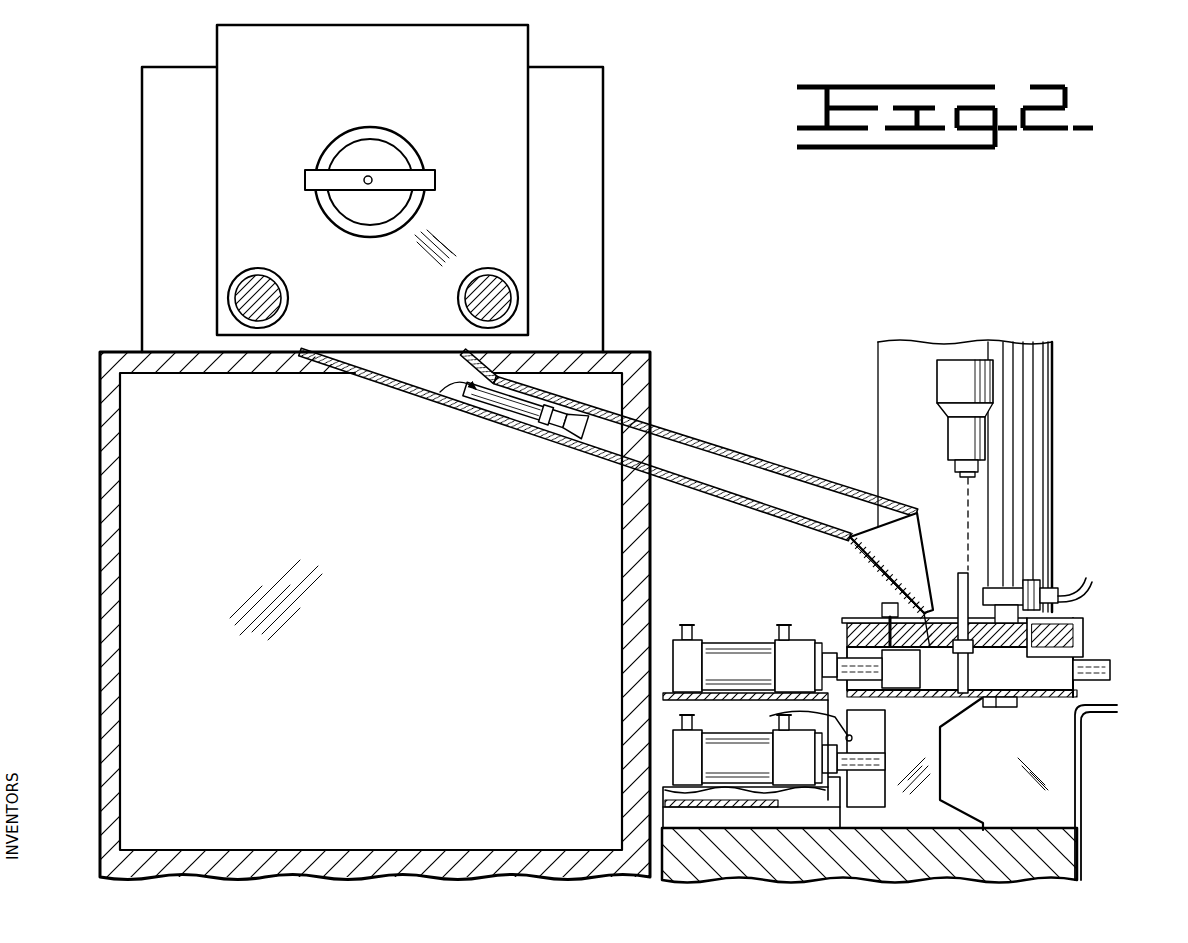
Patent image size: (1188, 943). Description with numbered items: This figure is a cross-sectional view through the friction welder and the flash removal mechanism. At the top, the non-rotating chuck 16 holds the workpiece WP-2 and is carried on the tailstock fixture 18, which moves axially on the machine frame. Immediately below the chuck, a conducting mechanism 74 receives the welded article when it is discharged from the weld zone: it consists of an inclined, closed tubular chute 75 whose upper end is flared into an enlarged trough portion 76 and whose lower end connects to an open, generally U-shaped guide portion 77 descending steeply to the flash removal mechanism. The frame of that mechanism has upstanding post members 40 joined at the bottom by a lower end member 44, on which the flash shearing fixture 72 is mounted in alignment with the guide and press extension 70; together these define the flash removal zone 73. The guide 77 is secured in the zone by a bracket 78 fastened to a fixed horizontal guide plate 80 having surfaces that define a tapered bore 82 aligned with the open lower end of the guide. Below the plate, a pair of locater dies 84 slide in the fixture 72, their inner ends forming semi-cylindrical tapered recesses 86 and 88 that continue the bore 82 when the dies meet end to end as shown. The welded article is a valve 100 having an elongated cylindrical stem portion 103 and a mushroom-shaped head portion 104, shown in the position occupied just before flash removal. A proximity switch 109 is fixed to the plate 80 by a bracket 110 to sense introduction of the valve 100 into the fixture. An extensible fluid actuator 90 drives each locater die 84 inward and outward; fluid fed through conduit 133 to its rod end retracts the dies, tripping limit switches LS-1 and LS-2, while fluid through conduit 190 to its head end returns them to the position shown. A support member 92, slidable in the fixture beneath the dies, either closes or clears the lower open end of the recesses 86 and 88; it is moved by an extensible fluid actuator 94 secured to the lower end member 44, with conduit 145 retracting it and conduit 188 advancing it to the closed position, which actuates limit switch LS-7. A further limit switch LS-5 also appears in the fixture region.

The tailstock fixture 18 is at (226, 41).
The chuck 16 is at (383, 150).
The workpiece WP-2 is at (372, 180).
The upper trough portion 76 is at (392, 360).
The conducting mechanism 74 is at (703, 428).
The tubular chute means 75 is at (742, 499).
The valve 100 is at (438, 395).
The post members 40 is at (926, 346).
The guide and press extension 70 is at (955, 433).
The U-shaped guide portion 77 is at (918, 519).
The guide plate 80 is at (830, 640).
The limit switch LS-1 is at (883, 604).
The bracket 78 is at (890, 600).
The tapered bore 82 is at (998, 667).
The semi-cylindrical tapered recess 86 is at (920, 669).
The stem portion 103 is at (960, 574).
The flash removal zone 73 is at (993, 580).
The proximity switch 109 is at (1012, 585).
The limit switch LS-2 is at (1082, 601).
The bracket 110 is at (1084, 627).
The flash shearing fixture 72 is at (1098, 652).
The locater dies 84 is at (1063, 683).
The semi-cylindrical tapered recess 88 is at (968, 702).
The limit switch LS-7 is at (1009, 706).
The head portion 104 is at (952, 693).
The conduit 190 is at (686, 626).
The extensible fluid actuator 90 is at (724, 666).
The conduit 133 is at (745, 662).
The limit switch LS-5 is at (787, 722).
The conduit 188 is at (676, 724).
The extensible fluid actuator 94 is at (723, 757).
The conduit 145 is at (797, 750).
The lower end member 44 is at (1066, 872).
The support member 92 is at (955, 815).